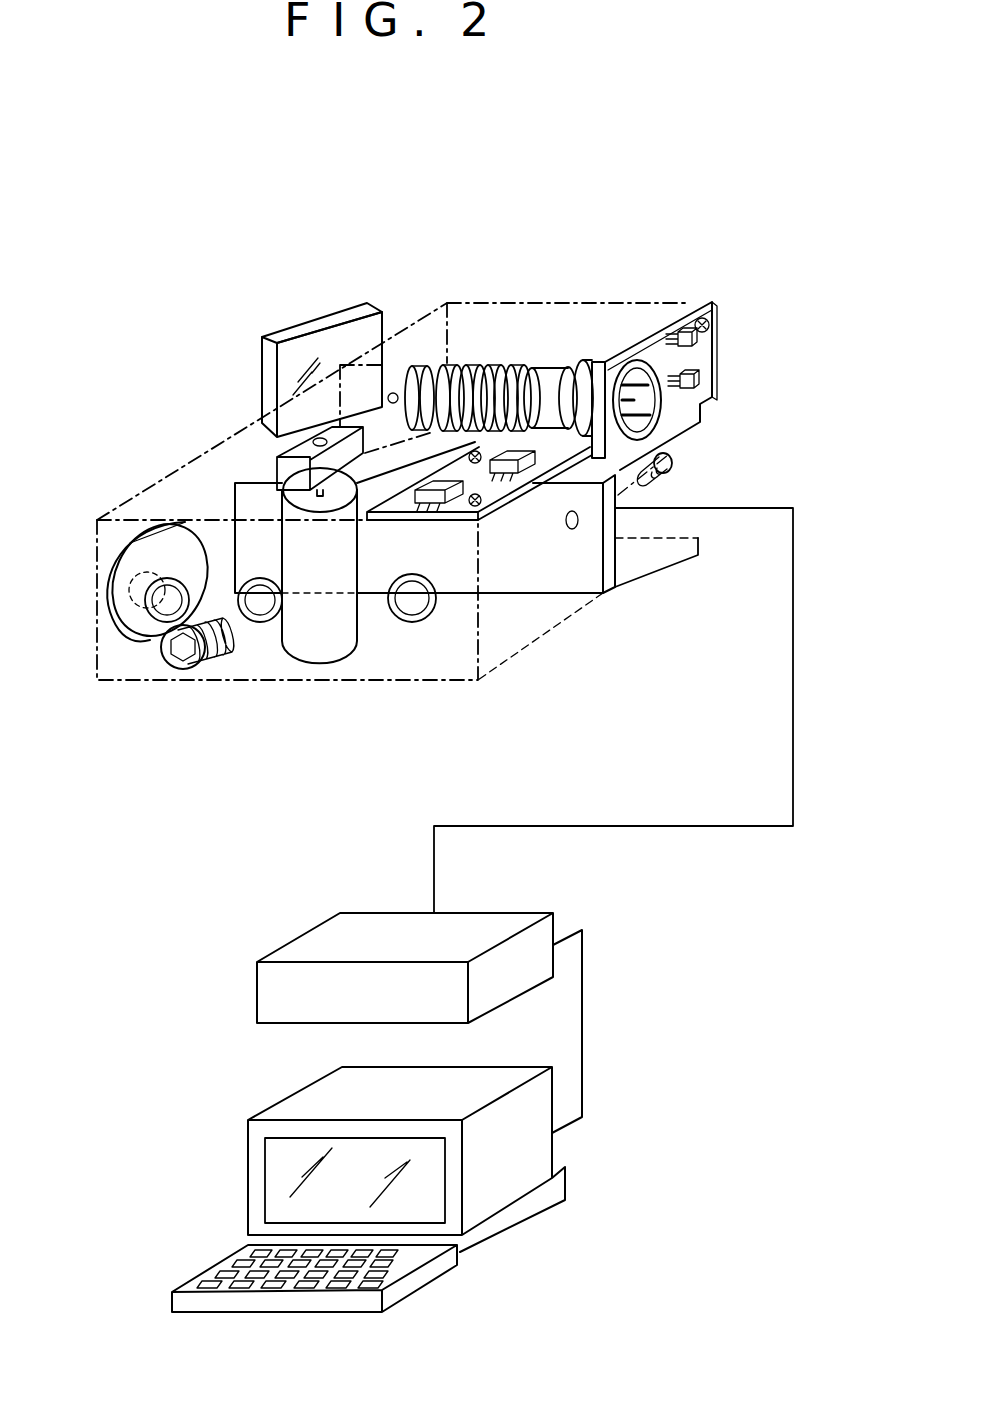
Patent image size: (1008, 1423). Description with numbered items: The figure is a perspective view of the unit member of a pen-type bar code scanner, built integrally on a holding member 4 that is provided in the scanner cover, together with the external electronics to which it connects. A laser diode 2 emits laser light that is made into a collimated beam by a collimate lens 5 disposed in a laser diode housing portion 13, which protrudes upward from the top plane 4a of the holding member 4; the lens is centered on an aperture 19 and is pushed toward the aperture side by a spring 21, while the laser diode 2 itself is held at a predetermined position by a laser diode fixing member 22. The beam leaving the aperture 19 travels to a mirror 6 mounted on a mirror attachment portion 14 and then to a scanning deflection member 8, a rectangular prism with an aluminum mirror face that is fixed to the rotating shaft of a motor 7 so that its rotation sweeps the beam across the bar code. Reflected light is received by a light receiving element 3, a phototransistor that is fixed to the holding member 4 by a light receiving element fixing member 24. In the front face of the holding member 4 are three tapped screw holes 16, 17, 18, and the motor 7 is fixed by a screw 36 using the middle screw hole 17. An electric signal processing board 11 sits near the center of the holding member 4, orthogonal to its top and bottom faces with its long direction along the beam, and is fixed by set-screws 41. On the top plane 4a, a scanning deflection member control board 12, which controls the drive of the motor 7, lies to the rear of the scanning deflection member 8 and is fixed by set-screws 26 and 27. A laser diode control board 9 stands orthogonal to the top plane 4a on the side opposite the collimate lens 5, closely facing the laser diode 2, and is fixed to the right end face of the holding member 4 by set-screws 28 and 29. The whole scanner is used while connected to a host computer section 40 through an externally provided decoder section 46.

The laser diode 2 is at (553, 388).
The light receiving element 3 is at (128, 597).
The holding member 4 is at (170, 472).
The top plane 4a is at (215, 482).
The collimate lens 5 is at (424, 385).
The mirror 6 is at (335, 340).
The motor 7 is at (330, 632).
The scanning deflection member 8 is at (305, 450).
The laser diode control board 9 is at (700, 353).
The electric signal processing board 11 is at (495, 577).
The scanning deflection member control board 12 is at (498, 491).
The laser diode housing portion 13 is at (530, 325).
The mirror attachment portion 14 is at (297, 320).
The screw hole 16 is at (168, 608).
The screw hole 17 is at (262, 602).
The screw hole 18 is at (413, 612).
The aperture 19 is at (395, 392).
The spring 21 is at (499, 392).
The laser diode fixing member 22 is at (664, 412).
The light receiving element fixing member 24 is at (112, 558).
The set-screw 26 is at (477, 450).
The set-screw 27 is at (474, 507).
The set-screw 28 is at (596, 366).
The set-screw 29 is at (706, 320).
The screw 36 is at (183, 652).
The host computer section 40 is at (249, 1163).
The set-screw 41 is at (678, 463).
The decoder section 46 is at (258, 987).